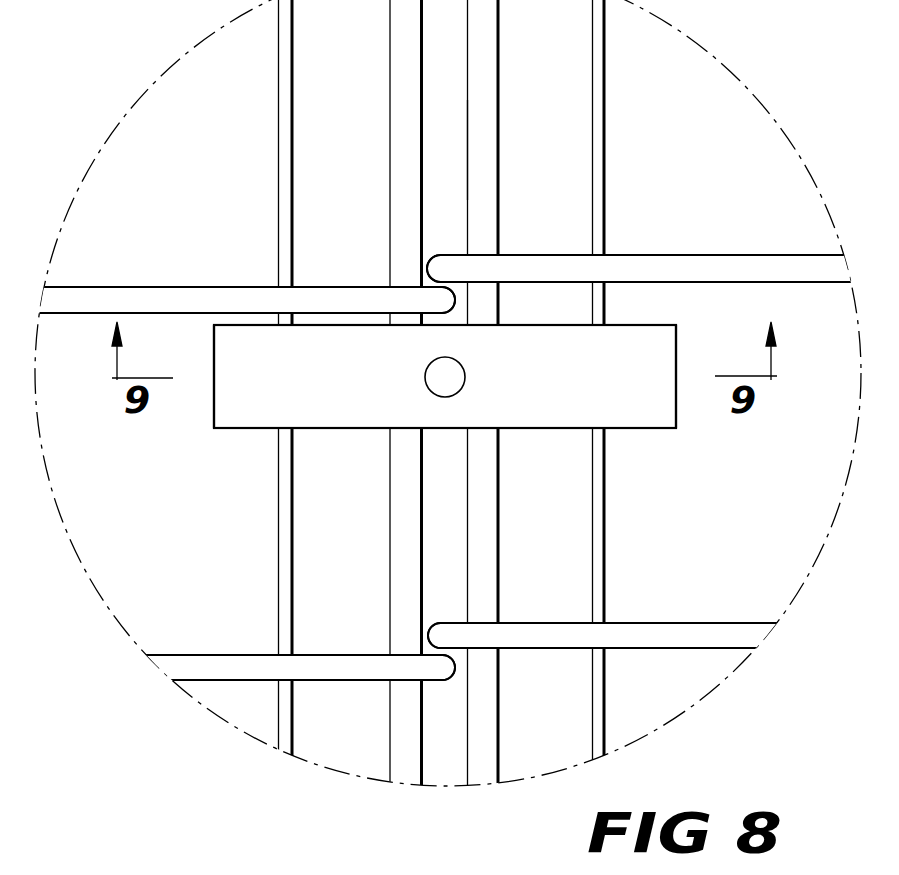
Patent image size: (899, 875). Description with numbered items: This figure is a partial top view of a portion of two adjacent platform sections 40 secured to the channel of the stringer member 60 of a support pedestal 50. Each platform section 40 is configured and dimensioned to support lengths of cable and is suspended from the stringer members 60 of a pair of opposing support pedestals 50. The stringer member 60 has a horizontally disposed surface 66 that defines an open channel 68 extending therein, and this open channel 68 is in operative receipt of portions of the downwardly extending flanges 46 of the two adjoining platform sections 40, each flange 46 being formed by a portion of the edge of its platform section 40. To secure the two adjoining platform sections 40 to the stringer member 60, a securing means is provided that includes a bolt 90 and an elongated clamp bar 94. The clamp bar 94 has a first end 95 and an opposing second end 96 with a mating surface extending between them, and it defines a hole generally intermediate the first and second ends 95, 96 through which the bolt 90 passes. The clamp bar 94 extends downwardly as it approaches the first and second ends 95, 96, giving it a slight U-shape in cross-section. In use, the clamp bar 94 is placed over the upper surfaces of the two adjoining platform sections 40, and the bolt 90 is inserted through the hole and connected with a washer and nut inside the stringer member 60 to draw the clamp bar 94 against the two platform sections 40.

The platform section 40 is at (128, 293).
The downwardly extending flange 46 is at (447, 298).
The support pedestal 50 is at (487, 527).
The stringer member 60 is at (492, 68).
The horizontally disposed surface 66 is at (475, 160).
The open channel 68 is at (427, 93).
The bolt 90 is at (453, 376).
The clamp bar 94 is at (568, 390).
The first end 95 is at (212, 431).
The second end 96 is at (670, 430).